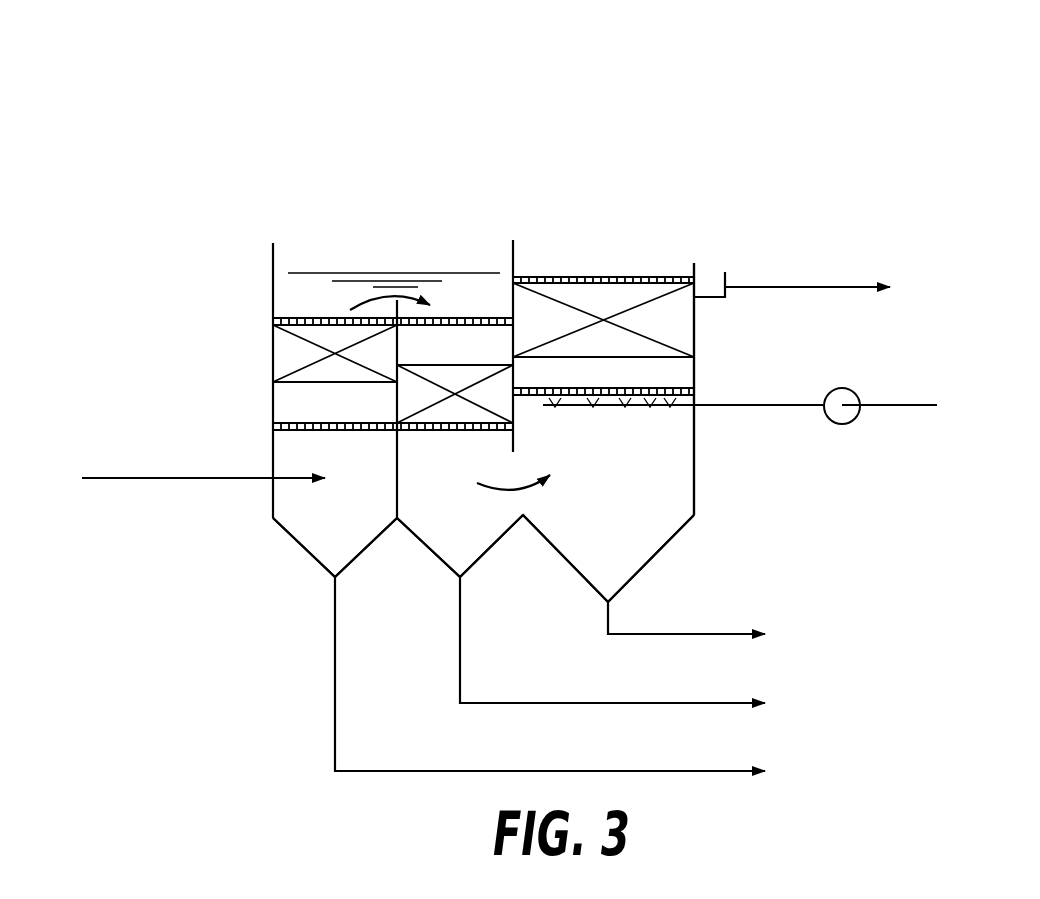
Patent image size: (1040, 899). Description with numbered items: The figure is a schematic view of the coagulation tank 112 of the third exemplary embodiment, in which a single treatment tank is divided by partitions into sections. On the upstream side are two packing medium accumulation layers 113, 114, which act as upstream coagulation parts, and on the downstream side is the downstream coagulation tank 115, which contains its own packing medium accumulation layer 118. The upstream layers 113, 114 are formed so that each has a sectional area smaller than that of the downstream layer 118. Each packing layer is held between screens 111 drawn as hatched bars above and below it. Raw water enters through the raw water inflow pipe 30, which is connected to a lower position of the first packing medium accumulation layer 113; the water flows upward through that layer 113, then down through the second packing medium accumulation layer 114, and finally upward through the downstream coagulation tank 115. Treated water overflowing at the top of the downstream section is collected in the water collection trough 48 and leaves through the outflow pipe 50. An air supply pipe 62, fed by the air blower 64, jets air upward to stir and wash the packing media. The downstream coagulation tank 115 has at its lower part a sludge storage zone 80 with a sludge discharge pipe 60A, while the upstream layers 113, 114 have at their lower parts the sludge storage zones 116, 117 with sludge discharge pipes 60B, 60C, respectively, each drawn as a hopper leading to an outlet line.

The coagulation tank 112 is at (775, 88).
The packing medium accumulation layer 113 is at (272, 360).
The packing medium accumulation layer 114 is at (457, 377).
The packing medium accumulation layer 118 is at (608, 303).
The screen 111 is at (399, 437).
The downstream coagulation tank 115 is at (695, 450).
The sludge storage zone 116 is at (358, 537).
The sludge storage zone 117 is at (485, 537).
The sludge storage zone 80 is at (625, 550).
The raw water inflow pipe 30 is at (158, 479).
The water collection trough 48 is at (727, 279).
The outflow pipe 50 is at (820, 287).
The air supply pipe 62 is at (752, 405).
The air blower 64 is at (857, 389).
The sludge discharge pipe 60A is at (683, 634).
The sludge discharge pipe 60B is at (683, 703).
The sludge discharge pipe 60C is at (683, 771).